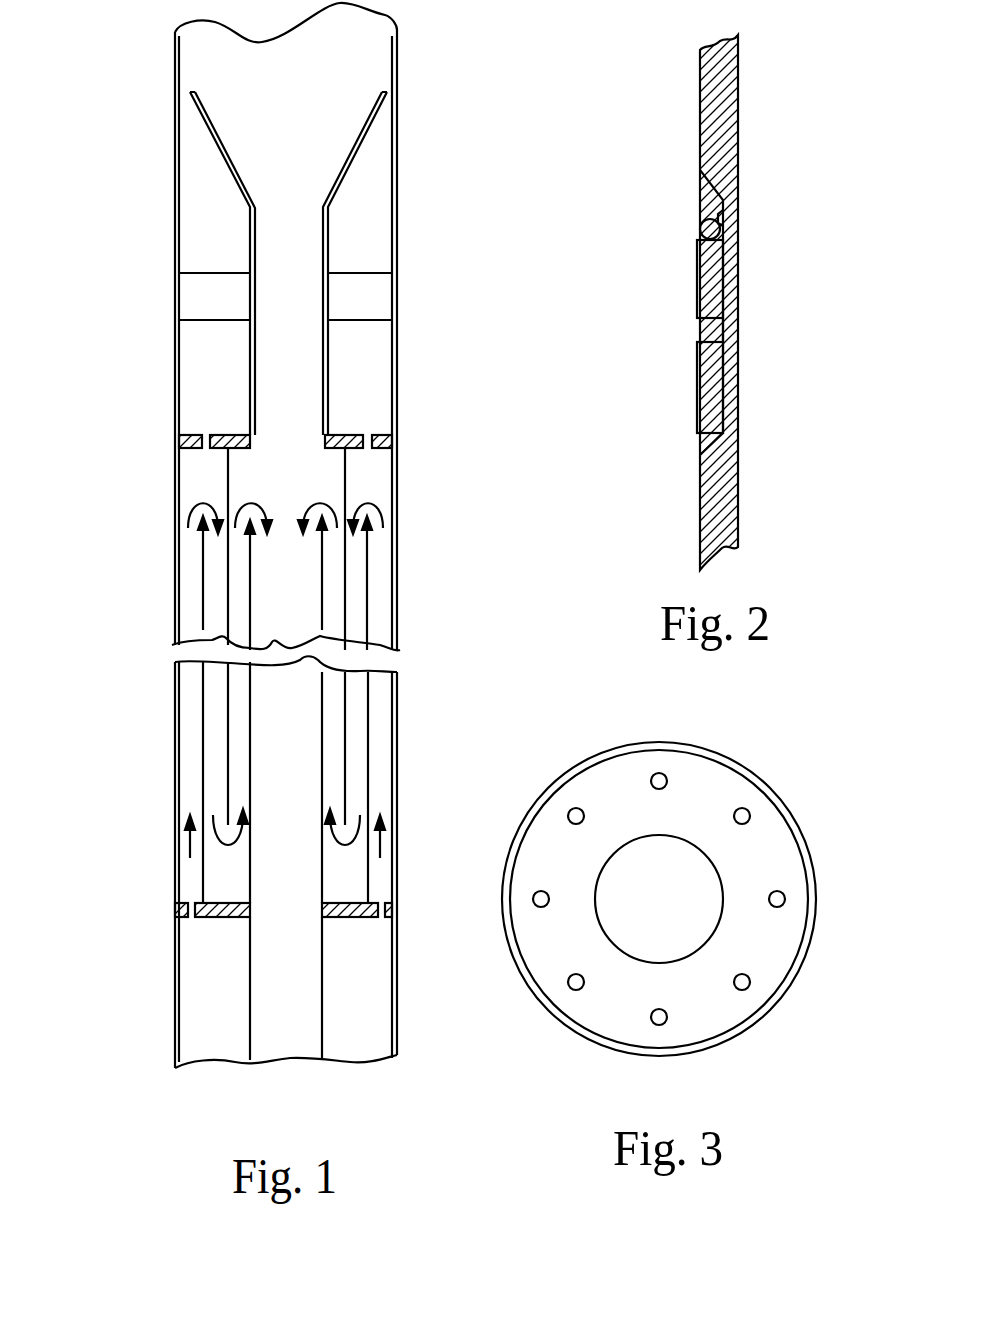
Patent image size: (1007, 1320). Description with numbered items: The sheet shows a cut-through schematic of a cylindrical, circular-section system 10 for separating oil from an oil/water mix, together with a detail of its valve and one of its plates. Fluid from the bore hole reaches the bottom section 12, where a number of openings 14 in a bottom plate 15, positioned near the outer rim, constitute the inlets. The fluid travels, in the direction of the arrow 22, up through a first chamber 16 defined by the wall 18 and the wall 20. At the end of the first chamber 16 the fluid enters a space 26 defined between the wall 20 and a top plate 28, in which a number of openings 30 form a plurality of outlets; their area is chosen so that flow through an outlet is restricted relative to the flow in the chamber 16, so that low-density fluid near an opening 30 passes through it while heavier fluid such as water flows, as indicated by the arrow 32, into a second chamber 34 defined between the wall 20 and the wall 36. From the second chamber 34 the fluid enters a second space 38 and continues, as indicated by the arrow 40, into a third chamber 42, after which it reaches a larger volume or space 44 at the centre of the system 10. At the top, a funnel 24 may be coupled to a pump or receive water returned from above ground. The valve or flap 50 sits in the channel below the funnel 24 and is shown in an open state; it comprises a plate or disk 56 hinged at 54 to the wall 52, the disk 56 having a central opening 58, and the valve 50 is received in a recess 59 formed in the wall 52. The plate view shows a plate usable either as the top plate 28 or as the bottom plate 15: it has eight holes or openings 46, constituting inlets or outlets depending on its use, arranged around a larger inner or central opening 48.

In FIG. 1, the system 10 is at (158, 310).
In FIG. 1, the bottom section 12 is at (195, 985).
In FIG. 1, the openings 14 is at (183, 903).
In FIG. 1, the bottom plate 15 is at (345, 917).
In FIG. 1, the first chamber 16 is at (187, 720).
In FIG. 1, the wall 18 is at (225, 750).
In FIG. 1, the wall 20 is at (198, 685).
In FIG. 1, the arrow 22 is at (188, 838).
In FIG. 1, the funnel 24 is at (262, 125).
In FIG. 1, the space 26 is at (193, 468).
In FIG. 1, the top plate 28 is at (225, 435).
In FIG. 1, the openings 30 is at (195, 437).
In FIG. 1, the arrow 32 is at (187, 507).
In FIG. 1, the second chamber 34 is at (210, 595).
In FIG. 1, the wall 36 is at (230, 620).
In FIG. 1, the second space 38 is at (220, 878).
In FIG. 1, the arrow 40 is at (212, 800).
In FIG. 1, the third chamber 42 is at (235, 740).
In FIG. 1, the space 44 is at (270, 575).
In FIG. 3, the holes 46 is at (665, 777).
In FIG. 3, the central opening 48 is at (688, 933).
In FIG. 1, the valve 50 is at (325, 372).
In FIG. 2, the valve 50 is at (651, 304).
In FIG. 1, the wall 52 is at (325, 220).
In FIG. 2, the wall 52 is at (735, 135).
In FIG. 2, the hinge 54 is at (710, 228).
In FIG. 2, the disk 56 is at (692, 251).
In FIG. 2, the central opening 58 is at (722, 332).
In FIG. 2, the recess 59 is at (720, 222).